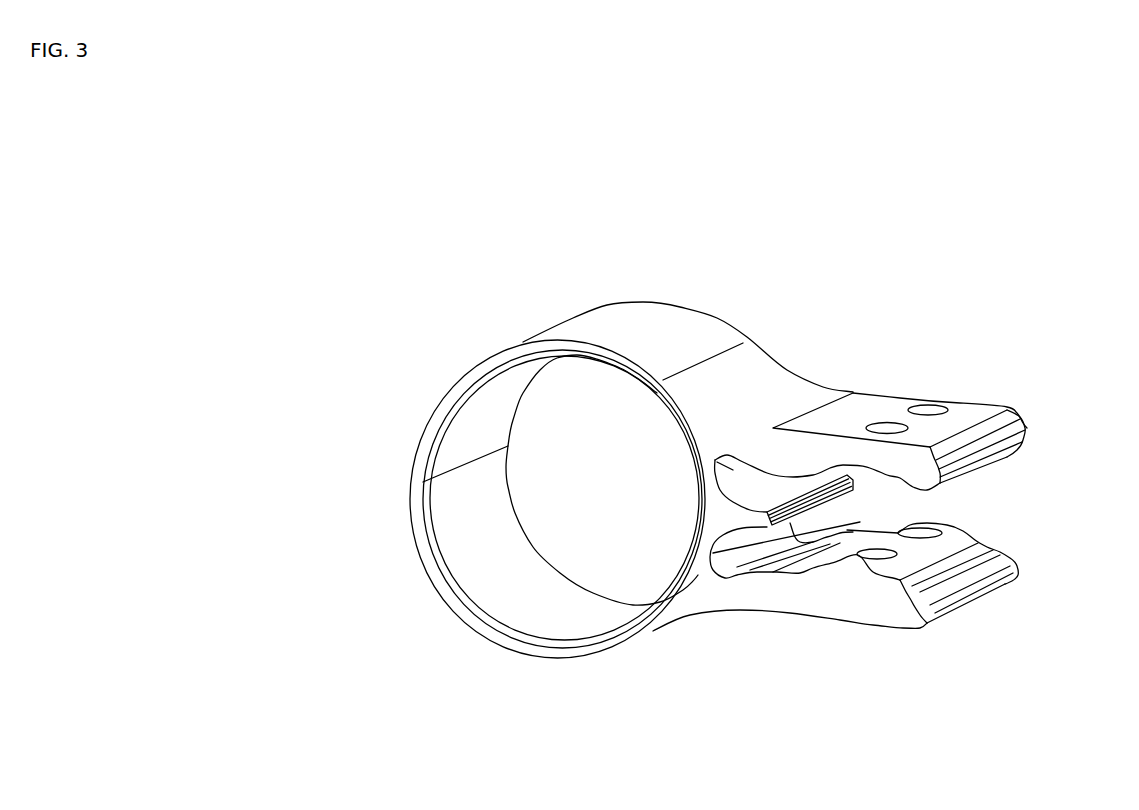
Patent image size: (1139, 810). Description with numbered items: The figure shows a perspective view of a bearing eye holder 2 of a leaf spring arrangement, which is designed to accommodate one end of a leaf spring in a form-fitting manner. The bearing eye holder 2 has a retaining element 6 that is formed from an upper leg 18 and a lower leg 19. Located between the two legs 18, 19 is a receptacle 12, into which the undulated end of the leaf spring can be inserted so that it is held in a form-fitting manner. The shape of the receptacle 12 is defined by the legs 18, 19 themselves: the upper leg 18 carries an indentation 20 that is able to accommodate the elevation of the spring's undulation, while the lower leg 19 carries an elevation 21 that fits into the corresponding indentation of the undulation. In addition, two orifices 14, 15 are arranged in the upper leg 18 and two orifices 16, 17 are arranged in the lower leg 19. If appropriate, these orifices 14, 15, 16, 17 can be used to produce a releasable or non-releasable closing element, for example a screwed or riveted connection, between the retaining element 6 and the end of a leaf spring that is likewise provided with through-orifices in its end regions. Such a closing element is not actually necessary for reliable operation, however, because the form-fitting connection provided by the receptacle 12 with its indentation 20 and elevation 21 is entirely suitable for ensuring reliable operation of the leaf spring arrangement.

The bearing eye holder 2 is at (606, 183).
The retaining element 6 is at (951, 342).
The receptacle 12 is at (848, 531).
The orifice 14 is at (933, 407).
The orifice 15 is at (887, 426).
The orifice 16 is at (913, 533).
The orifice 17 is at (877, 556).
The upper leg 18 is at (1027, 428).
The lower leg 19 is at (1015, 568).
The indentation 20 is at (875, 482).
The elevation 21 is at (915, 558).